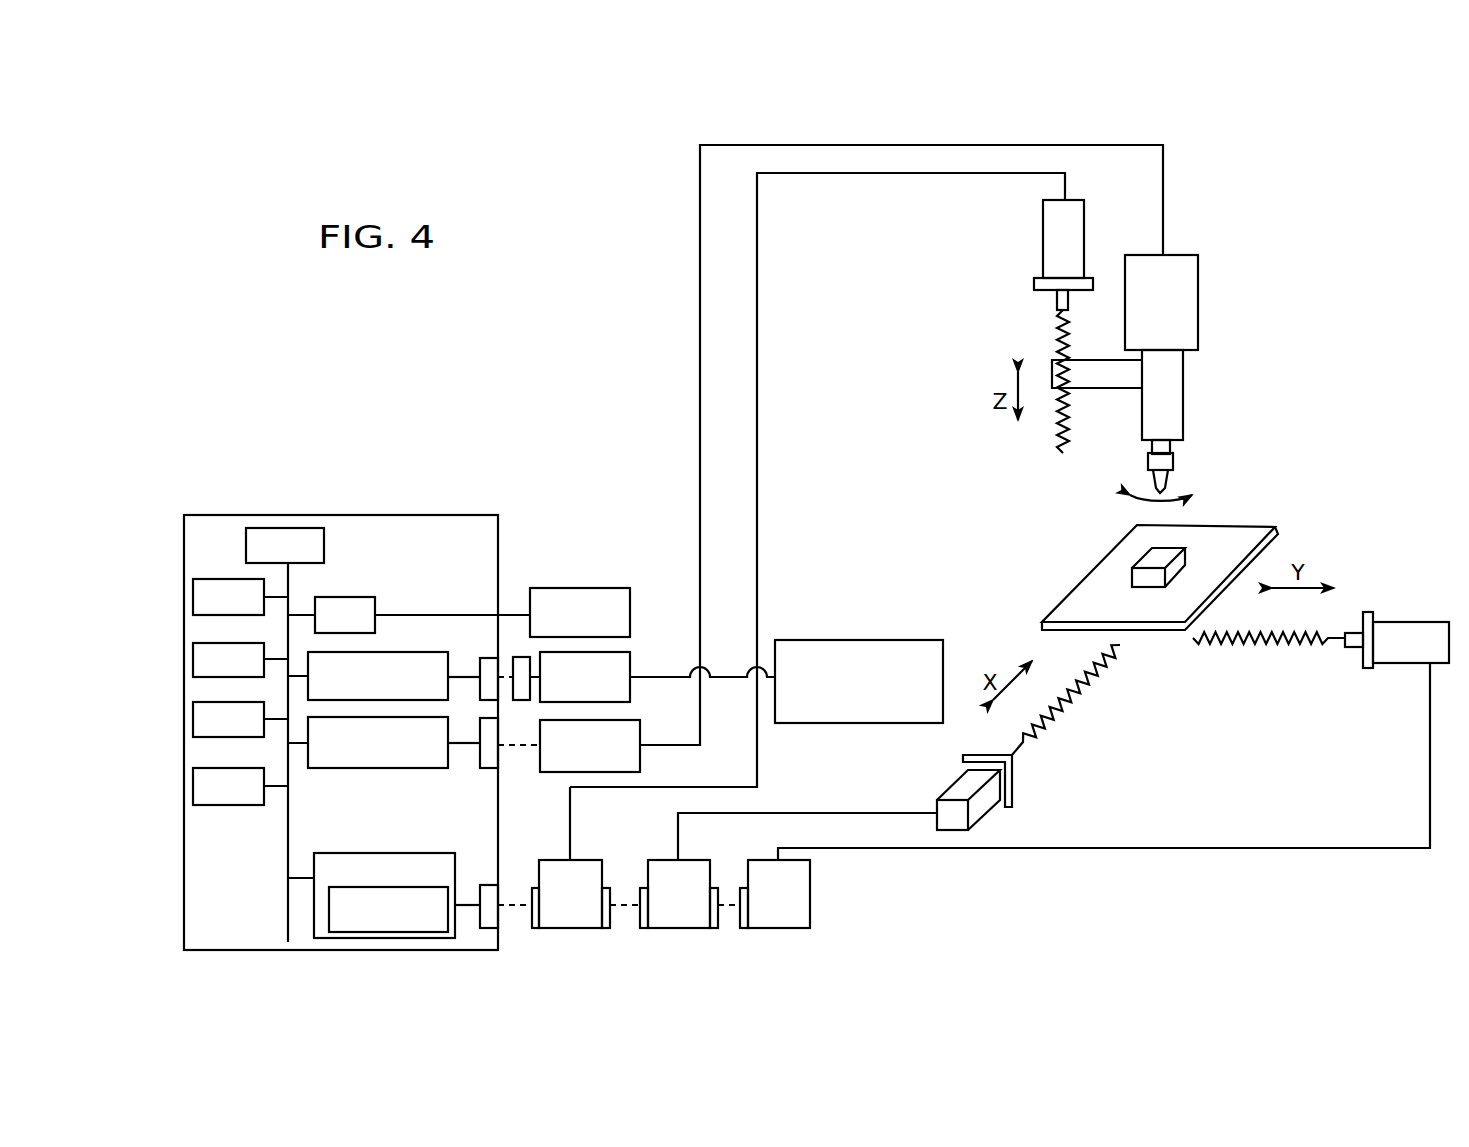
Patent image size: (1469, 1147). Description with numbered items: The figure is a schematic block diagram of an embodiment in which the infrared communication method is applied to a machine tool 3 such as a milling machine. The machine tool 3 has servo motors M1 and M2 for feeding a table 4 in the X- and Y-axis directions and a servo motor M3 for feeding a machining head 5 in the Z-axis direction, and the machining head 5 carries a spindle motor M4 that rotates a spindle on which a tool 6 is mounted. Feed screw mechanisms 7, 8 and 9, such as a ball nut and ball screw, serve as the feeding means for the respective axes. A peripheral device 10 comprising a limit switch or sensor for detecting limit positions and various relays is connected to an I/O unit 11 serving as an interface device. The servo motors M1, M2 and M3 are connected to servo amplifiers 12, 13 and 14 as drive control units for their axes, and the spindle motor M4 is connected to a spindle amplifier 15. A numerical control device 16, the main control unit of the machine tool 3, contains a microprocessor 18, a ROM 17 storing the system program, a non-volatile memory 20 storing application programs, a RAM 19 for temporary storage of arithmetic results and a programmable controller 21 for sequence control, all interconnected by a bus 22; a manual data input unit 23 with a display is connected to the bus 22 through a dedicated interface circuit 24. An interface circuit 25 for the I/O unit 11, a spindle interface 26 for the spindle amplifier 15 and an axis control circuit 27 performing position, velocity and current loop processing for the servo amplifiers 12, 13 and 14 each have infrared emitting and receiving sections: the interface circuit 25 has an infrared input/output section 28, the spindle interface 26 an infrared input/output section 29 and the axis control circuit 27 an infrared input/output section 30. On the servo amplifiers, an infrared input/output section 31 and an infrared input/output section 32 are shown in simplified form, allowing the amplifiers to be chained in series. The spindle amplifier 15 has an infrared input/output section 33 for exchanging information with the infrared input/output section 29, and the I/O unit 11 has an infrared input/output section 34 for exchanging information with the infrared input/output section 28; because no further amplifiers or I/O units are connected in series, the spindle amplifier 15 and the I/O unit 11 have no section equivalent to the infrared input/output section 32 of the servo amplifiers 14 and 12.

The machine tool 3 is at (1217, 360).
The table 4 is at (1242, 514).
The machining head 5 is at (1230, 242).
The tool 6 is at (1165, 488).
The feed screw mechanism 7 is at (1070, 700).
The feed screw mechanism 8 is at (1285, 645).
The feed screw mechanism 9 is at (1057, 338).
The peripheral device 10 is at (903, 640).
The I/O unit 11 is at (630, 667).
The servo amplifier 12 is at (683, 928).
The servo amplifier 13 is at (790, 928).
The servo amplifier 14 is at (583, 928).
The spindle amplifier 15 is at (640, 729).
The numerical control device 16 is at (485, 515).
The ROM 17 is at (193, 596).
The microprocessor 18 is at (296, 515).
The RAM 19 is at (193, 659).
The non-volatile memory 20 is at (193, 719).
The programmable controller 21 is at (193, 786).
The bus 22 is at (288, 807).
The manual data input unit 23 is at (605, 588).
The dedicated interface circuit 24 is at (372, 597).
The interface circuit 25 is at (420, 652).
The spindle interface 26 is at (383, 768).
The axis control circuit 27 is at (425, 853).
The infrared input/output section 28 is at (486, 662).
The infrared input/output section 29 is at (488, 768).
The infrared input/output section 30 is at (488, 928).
The infrared input/output section 31 is at (535, 928).
The infrared input/output section 32 is at (607, 928).
The infrared input/output section 33 is at (545, 752).
The infrared input/output section 34 is at (519, 657).
The servo motor M1 is at (980, 810).
The servo motor M2 is at (1405, 657).
The servo motor M3 is at (1075, 215).
The spindle motor M4 is at (1193, 287).